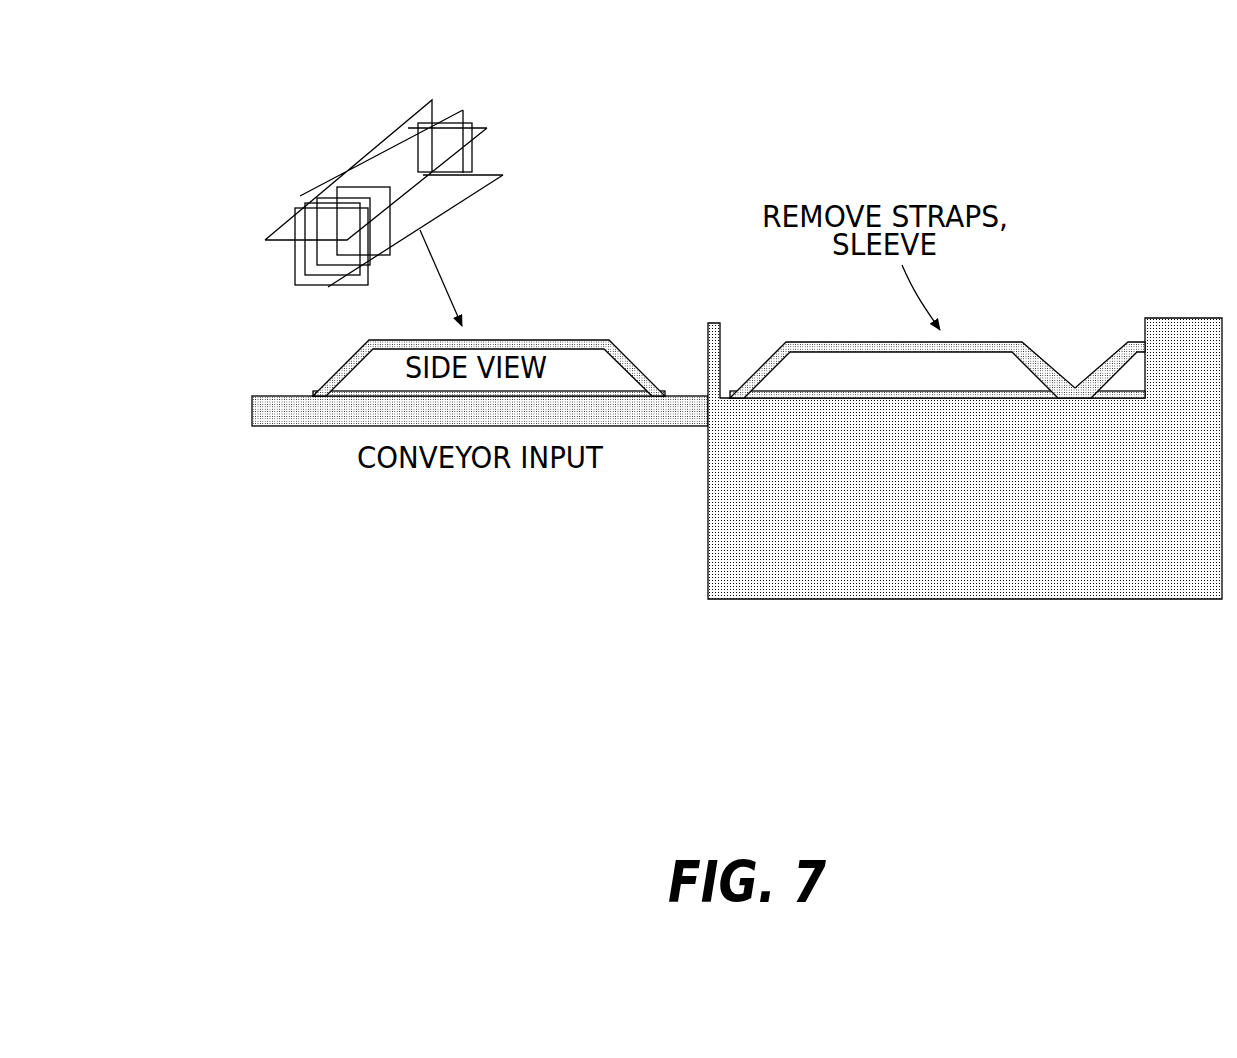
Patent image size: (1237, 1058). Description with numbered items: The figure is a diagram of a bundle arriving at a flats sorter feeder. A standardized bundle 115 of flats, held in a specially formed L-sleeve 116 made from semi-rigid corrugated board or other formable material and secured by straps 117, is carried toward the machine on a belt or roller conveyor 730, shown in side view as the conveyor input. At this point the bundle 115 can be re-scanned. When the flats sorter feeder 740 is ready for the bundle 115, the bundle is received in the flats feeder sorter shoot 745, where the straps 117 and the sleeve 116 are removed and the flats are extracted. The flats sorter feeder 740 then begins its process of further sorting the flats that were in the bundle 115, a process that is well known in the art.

The bundle 115 is at (422, 108).
The L-sleeve 116 is at (340, 170).
The straps 117 is at (468, 184).
The belt or roller conveyor 730 is at (252, 426).
The flats sorter feeder 740 is at (937, 600).
The flats feeder sorter shoot 745 is at (1057, 372).